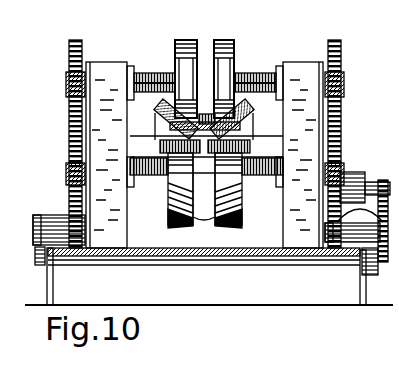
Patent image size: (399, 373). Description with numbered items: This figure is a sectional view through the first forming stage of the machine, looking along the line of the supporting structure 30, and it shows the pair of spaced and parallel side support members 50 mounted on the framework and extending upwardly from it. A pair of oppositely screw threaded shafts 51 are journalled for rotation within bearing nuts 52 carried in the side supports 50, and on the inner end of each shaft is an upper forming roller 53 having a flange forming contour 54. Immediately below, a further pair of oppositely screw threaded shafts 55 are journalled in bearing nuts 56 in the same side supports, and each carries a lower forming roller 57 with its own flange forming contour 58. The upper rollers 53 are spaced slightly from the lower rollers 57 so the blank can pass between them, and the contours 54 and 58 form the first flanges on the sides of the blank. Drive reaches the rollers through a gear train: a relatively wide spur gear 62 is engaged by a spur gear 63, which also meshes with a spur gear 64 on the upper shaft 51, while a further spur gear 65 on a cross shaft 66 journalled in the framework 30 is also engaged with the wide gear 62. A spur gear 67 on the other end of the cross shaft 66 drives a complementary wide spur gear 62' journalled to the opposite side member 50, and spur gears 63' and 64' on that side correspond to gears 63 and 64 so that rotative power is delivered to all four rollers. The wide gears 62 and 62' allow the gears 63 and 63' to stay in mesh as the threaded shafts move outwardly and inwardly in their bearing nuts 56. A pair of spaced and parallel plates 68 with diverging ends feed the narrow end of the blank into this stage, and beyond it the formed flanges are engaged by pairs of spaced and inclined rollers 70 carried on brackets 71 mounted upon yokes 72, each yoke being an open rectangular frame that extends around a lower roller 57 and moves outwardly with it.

The supporting structure 30 is at (50, 280).
The side support members 50 is at (103, 75).
The screw threaded shafts 51 is at (151, 77).
The bearing nuts 52 is at (132, 71).
The upper forming roller 53 is at (214, 40).
The flange forming contour 54 is at (177, 41).
The shafts 55 is at (149, 183).
The bearing nuts 56 is at (278, 186).
The lower forming roller 57 is at (192, 217).
The flange forming contour 58 is at (232, 220).
The spur gear 62 is at (351, 255).
The spur gear 62' is at (57, 225).
The spur gear 63 is at (357, 192).
The spur gear 63' is at (56, 192).
The spur gear 64 is at (348, 101).
The spur gear 64' is at (71, 87).
The spur gear 65 is at (378, 241).
The cross shaft 66 is at (181, 302).
The spur gear 67 is at (35, 276).
The plates 68 is at (205, 114).
The inclined rollers 70 is at (238, 120).
The brackets 71 is at (160, 131).
The yokes 72 is at (205, 155).